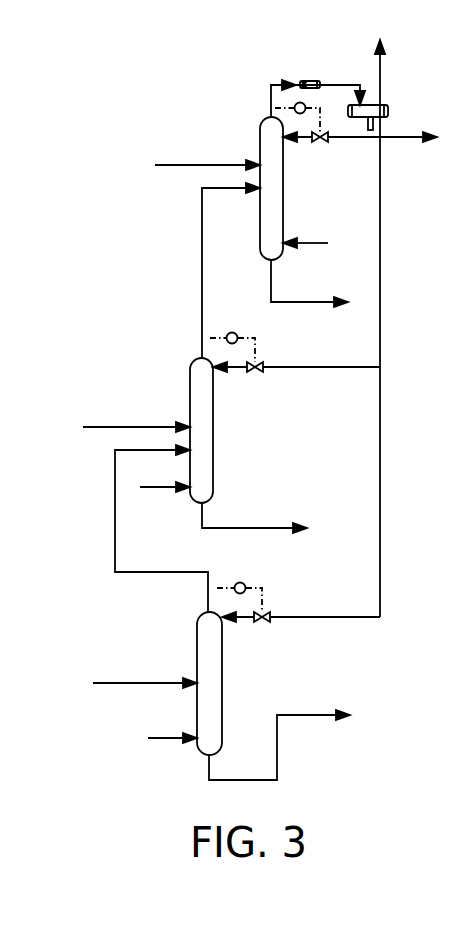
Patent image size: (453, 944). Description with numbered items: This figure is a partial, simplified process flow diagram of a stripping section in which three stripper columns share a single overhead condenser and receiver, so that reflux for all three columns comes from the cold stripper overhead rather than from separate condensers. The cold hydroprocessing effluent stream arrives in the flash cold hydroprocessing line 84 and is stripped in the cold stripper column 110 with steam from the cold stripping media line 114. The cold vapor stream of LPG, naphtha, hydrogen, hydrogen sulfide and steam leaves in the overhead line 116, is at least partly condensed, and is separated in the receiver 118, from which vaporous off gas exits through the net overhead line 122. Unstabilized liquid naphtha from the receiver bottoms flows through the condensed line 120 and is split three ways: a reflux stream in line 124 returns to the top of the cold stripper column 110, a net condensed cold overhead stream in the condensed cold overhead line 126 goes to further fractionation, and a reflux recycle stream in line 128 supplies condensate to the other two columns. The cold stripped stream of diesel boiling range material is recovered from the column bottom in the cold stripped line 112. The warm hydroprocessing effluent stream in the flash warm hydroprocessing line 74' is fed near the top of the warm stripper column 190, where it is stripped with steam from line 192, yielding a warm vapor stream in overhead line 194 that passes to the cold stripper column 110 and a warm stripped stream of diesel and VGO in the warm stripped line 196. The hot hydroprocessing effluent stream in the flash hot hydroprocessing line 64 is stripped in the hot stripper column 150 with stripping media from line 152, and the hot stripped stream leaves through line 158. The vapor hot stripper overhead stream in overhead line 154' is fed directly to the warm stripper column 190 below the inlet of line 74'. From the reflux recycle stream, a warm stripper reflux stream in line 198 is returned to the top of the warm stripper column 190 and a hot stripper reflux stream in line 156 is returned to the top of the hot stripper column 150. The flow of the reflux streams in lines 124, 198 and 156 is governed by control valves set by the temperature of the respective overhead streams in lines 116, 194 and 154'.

The cold stripper column 110 is at (287, 183).
The cold stripped line 112 is at (302, 302).
The cold stripping media line 114 is at (313, 243).
The overhead line 116 is at (270, 85).
The receiver 118 is at (385, 105).
The condensed line 120 is at (388, 123).
The net overhead line 122 is at (379, 69).
The reflux stream line 124 is at (355, 140).
The condensed cold overhead line 126 is at (408, 139).
The reflux recycle line 128 is at (405, 292).
The flash cold hydroprocessing line 84 is at (190, 165).
The overhead line 194 is at (202, 278).
The warm stripper column 190 is at (213, 415).
The warm stripper reflux stream line 198 is at (362, 367).
The flash warm hydroprocessing line 74' is at (136, 407).
The warm stripped line 196 is at (272, 528).
The warm stripping media line 192 is at (165, 487).
The overhead line 154' is at (161, 528).
The hot stripper column 150 is at (222, 662).
The hot stripper reflux stream line 156 is at (350, 618).
The flash hot hydroprocessing line 64 is at (143, 683).
The hot stripping media line 152 is at (153, 738).
The hot stripped line 158 is at (297, 715).